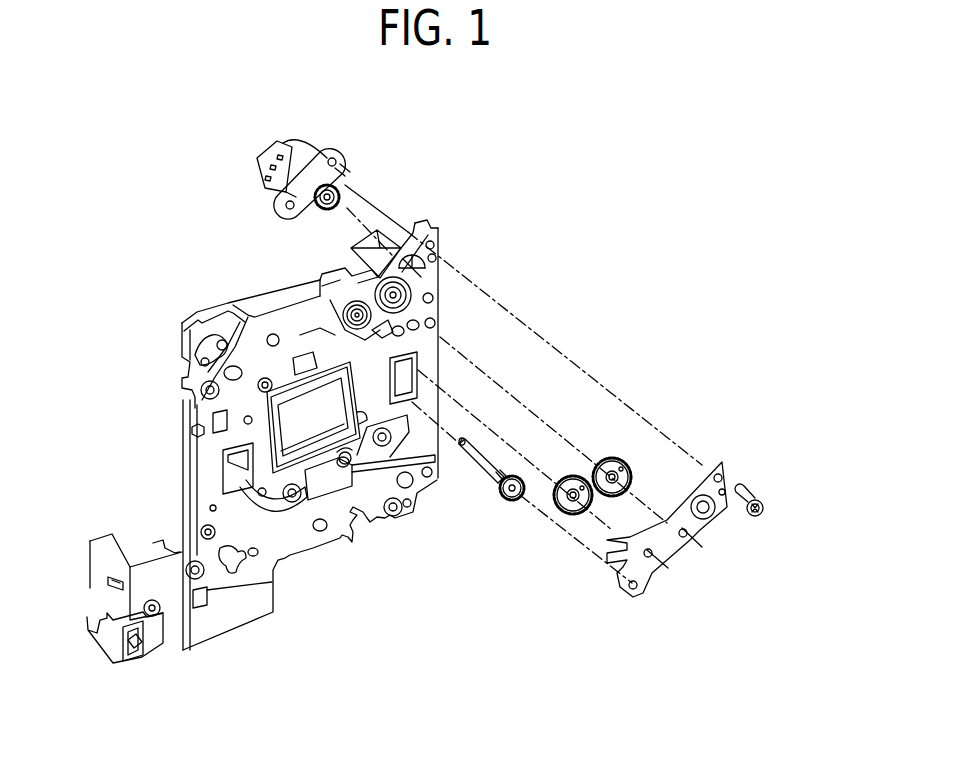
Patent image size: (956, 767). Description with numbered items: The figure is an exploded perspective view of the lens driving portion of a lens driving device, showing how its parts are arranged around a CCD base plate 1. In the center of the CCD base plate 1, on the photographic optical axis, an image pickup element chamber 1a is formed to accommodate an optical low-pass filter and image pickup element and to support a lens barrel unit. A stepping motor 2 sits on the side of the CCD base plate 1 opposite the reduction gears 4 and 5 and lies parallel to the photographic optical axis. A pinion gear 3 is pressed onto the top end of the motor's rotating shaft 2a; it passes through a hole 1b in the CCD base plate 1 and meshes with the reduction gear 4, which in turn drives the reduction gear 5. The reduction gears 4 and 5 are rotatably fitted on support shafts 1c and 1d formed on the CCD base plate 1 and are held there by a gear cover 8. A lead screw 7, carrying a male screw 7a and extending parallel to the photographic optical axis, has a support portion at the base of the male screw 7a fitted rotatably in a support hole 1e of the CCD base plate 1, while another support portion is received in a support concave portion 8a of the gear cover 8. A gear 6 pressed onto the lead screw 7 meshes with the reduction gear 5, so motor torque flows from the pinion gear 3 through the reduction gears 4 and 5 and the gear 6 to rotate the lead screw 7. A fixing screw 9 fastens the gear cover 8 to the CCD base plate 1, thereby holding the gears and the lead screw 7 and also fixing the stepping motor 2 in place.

The CCD base plate 1 is at (297, 470).
The image pickup element chamber 1a is at (313, 448).
The hole 1b is at (430, 272).
The support shaft 1c is at (431, 300).
The support shaft 1d is at (333, 285).
The support hole 1e is at (318, 330).
The stepping motor 2 is at (333, 157).
The rotating shaft 2a is at (340, 187).
The pinion gear 3 is at (340, 173).
The reduction gear 4 is at (610, 458).
The reduction gear 5 is at (560, 513).
The gear 6 is at (513, 500).
The lead screw 7 is at (473, 490).
The male screw 7a is at (457, 447).
The gear cover 8 is at (675, 558).
The support concave portion 8a is at (632, 593).
The fixing screw 9 is at (763, 500).